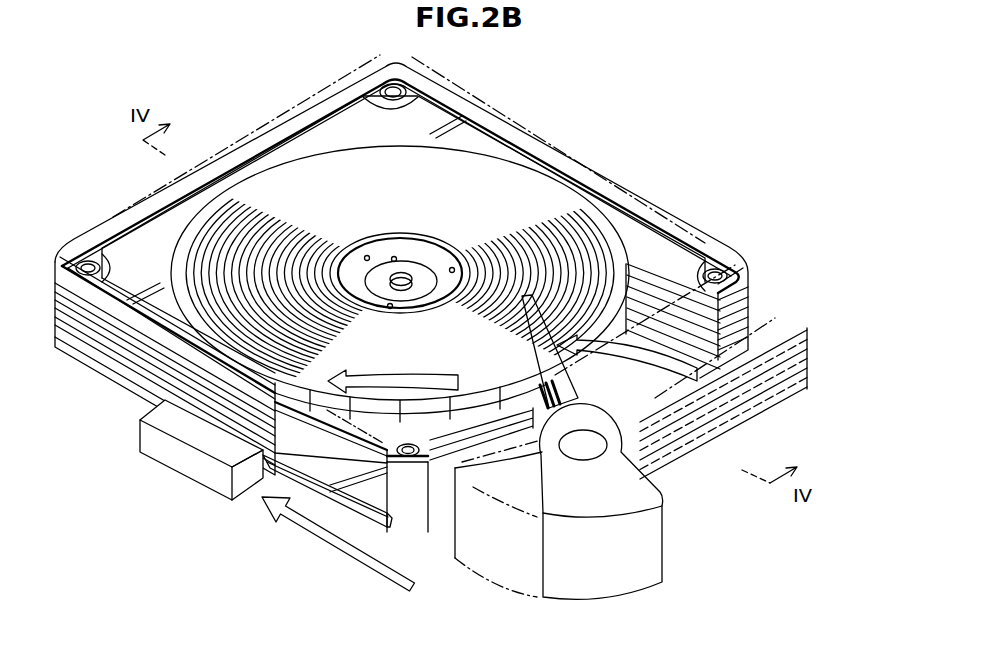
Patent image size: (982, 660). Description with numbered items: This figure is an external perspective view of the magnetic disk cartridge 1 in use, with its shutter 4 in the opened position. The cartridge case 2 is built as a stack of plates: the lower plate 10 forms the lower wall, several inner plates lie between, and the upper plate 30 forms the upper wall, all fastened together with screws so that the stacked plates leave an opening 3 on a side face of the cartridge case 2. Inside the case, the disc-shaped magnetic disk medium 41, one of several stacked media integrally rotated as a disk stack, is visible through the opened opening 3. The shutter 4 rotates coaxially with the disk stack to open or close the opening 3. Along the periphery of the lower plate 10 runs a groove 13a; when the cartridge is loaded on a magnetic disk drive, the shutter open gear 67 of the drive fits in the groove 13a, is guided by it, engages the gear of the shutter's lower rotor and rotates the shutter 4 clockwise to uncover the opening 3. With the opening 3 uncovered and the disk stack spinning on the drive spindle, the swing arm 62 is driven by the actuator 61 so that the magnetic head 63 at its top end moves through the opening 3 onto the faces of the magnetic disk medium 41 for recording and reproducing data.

The magnetic disk cartridge 1 is at (513, 88).
The cartridge case 2 is at (540, 137).
The opening 3 is at (692, 331).
The shutter 4 is at (452, 518).
The lower plate 10 is at (115, 385).
The groove 13a is at (320, 543).
The upper plate 30 is at (732, 247).
The magnetic disk medium 41 is at (517, 200).
The actuator 61 is at (688, 491).
The swing arm 62 is at (651, 414).
The magnetic head 63 is at (809, 337).
The shutter open gear 67 is at (180, 462).